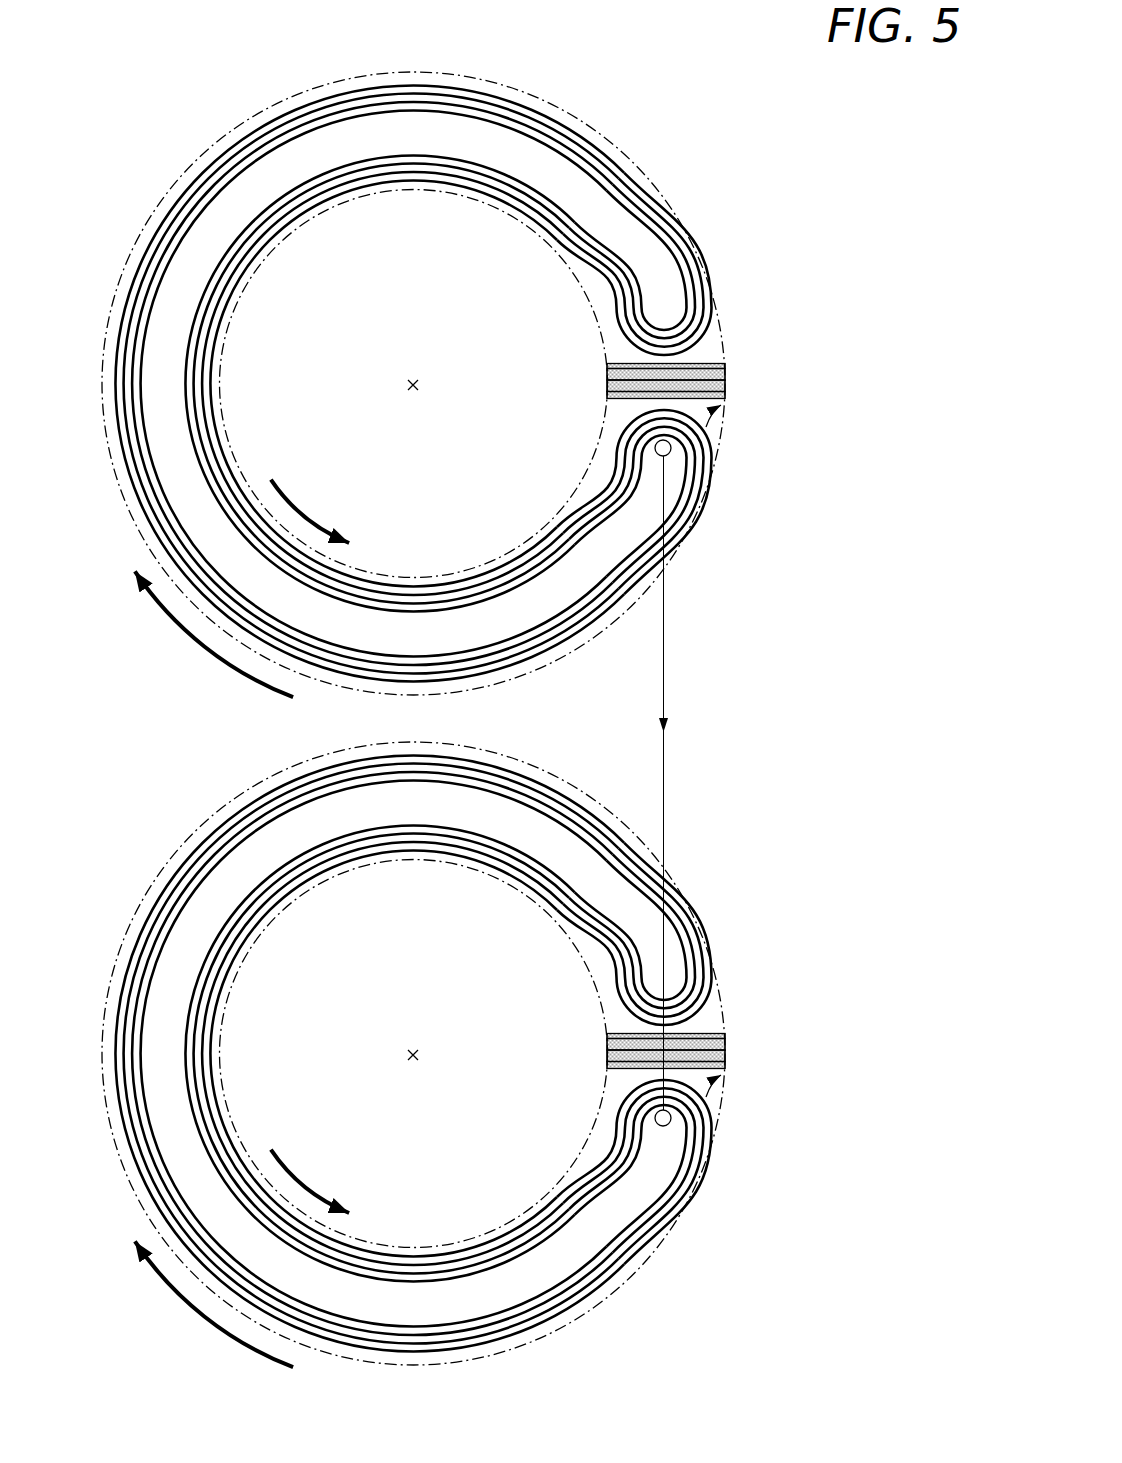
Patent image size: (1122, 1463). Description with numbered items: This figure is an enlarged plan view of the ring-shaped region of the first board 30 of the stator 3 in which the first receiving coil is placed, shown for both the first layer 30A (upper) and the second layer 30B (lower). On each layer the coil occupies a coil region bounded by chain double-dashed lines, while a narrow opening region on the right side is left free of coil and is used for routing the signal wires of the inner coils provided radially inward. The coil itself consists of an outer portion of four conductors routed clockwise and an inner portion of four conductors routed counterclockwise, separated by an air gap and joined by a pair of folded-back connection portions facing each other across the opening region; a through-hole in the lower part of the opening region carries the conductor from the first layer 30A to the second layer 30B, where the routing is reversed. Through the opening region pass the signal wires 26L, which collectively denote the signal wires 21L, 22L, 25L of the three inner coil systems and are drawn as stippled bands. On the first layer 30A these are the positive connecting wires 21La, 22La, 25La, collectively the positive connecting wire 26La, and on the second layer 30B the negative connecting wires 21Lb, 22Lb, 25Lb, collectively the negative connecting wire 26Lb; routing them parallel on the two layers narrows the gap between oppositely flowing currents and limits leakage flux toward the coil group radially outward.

The stator 3 is at (500, 686).
The first board 30 is at (113, 90).
The first layer 30A is at (145, 173).
The second layer 30B is at (145, 860).
The positive connecting wire 26La is at (781, 323).
The negative connecting wire 26Lb is at (925, 1066).
The signal wires 26L is at (925, 396).
The first lead wire 25La is at (743, 331).
The first lead wire 25Lb is at (700, 1037).
The signal wire 25L is at (690, 368).
The second lead wire 22La is at (750, 356).
The second lead wire 22Lb is at (705, 1045).
The signal wire 22L is at (703, 375).
The third lead wire 21La is at (760, 388).
The third lead wire 21Lb is at (705, 1062).
The signal wire 21L is at (703, 392).